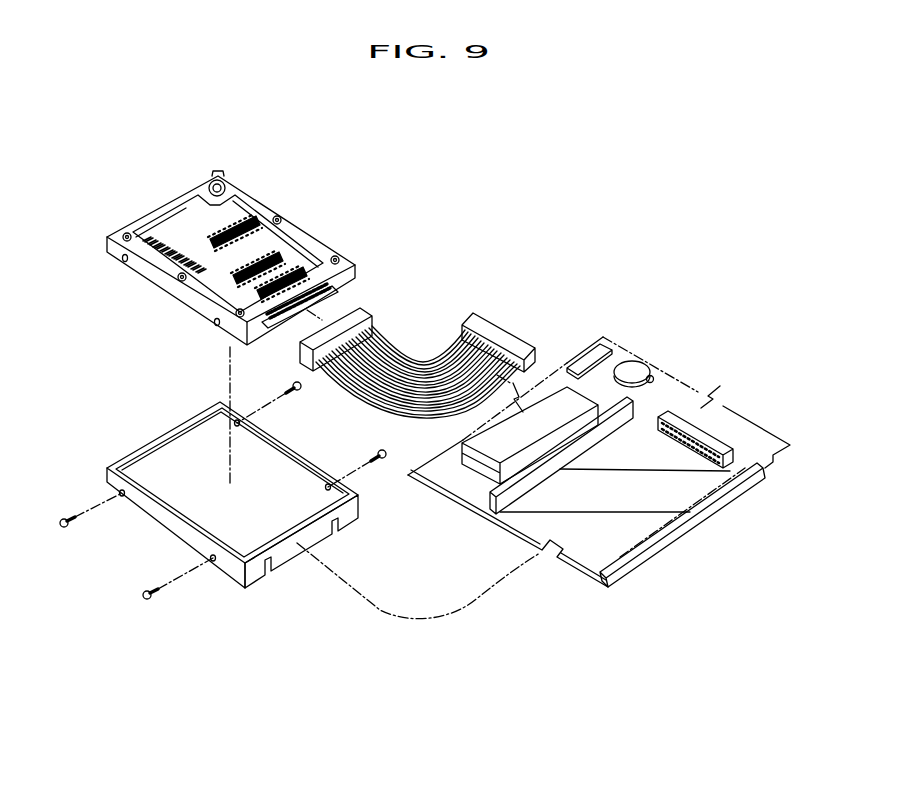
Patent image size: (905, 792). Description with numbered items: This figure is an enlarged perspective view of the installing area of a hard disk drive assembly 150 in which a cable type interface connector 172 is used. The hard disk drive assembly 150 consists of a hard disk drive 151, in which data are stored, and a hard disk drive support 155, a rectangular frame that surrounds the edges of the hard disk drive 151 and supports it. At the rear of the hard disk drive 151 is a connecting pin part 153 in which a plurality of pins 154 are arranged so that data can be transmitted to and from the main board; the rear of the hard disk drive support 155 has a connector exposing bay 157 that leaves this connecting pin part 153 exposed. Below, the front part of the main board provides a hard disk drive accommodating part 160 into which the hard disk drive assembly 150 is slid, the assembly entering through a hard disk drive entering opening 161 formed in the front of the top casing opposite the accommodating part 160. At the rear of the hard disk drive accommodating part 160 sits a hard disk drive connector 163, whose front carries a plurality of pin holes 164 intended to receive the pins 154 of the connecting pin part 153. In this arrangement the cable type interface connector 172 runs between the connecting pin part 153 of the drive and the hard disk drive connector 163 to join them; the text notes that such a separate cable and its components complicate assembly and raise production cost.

The hard disk drive assembly 150 is at (88, 287).
The hard disk drive 151 is at (135, 263).
The connecting pin part 153 is at (283, 318).
The pins 154 is at (273, 316).
The hard disk drive support 155 is at (107, 483).
The connector exposing bay 157 is at (255, 568).
The hard disk drive accommodating part 160 is at (632, 497).
The hard disk drive entering opening 161 is at (600, 583).
The hard disk drive connector 163 is at (716, 439).
The pin holes 164 is at (707, 473).
The cable type interface connector 172 is at (496, 307).